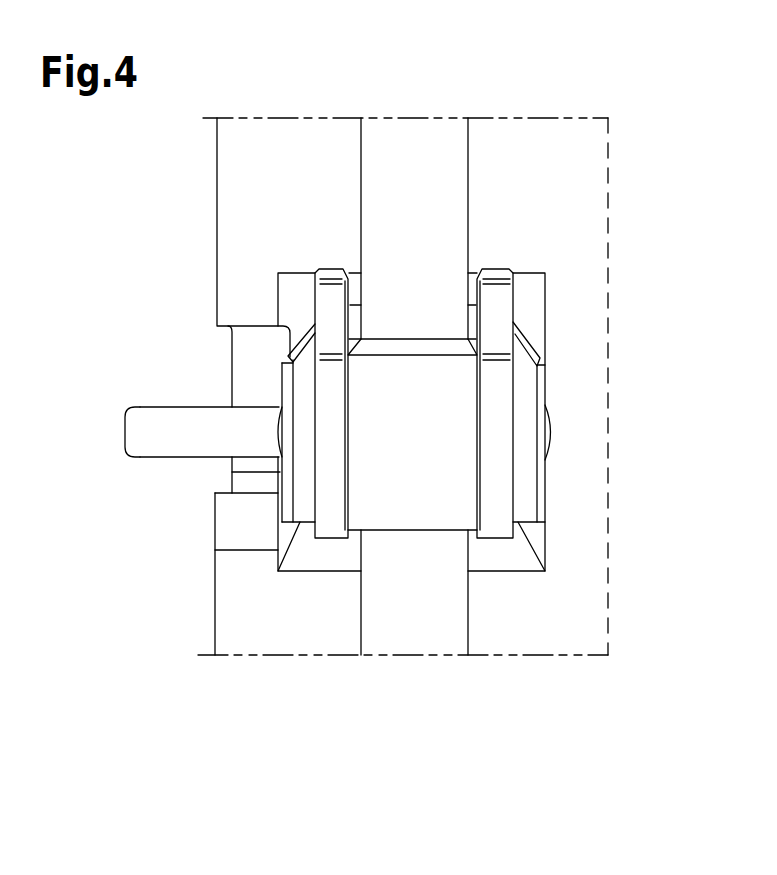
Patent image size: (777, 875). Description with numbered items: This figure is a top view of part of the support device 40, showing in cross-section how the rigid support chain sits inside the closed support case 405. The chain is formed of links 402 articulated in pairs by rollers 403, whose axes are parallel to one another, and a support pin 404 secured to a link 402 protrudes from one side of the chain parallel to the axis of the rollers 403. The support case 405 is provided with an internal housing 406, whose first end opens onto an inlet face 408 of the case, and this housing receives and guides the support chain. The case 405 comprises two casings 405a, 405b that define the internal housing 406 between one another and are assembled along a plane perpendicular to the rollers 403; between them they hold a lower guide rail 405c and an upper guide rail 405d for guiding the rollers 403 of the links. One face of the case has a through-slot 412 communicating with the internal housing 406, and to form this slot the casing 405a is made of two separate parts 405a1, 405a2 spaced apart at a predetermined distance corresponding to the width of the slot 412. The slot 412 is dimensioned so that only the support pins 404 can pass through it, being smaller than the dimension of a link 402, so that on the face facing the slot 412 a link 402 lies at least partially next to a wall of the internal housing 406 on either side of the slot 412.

The support device 40 is at (261, 86).
The support case 405 is at (596, 114).
The casing 405a is at (311, 118).
The first part of casing 405a1 is at (248, 153).
The second part of casing 405a2 is at (258, 608).
The casing 405b is at (524, 118).
The lower guide rail 405c is at (407, 118).
The upper guide rail 405d is at (438, 620).
The link 402 is at (497, 302).
The roller 403 is at (457, 400).
The support pin 404 is at (159, 418).
The internal housing 406 is at (304, 292).
The inlet face 408 is at (575, 153).
The through-slot 412 is at (238, 484).